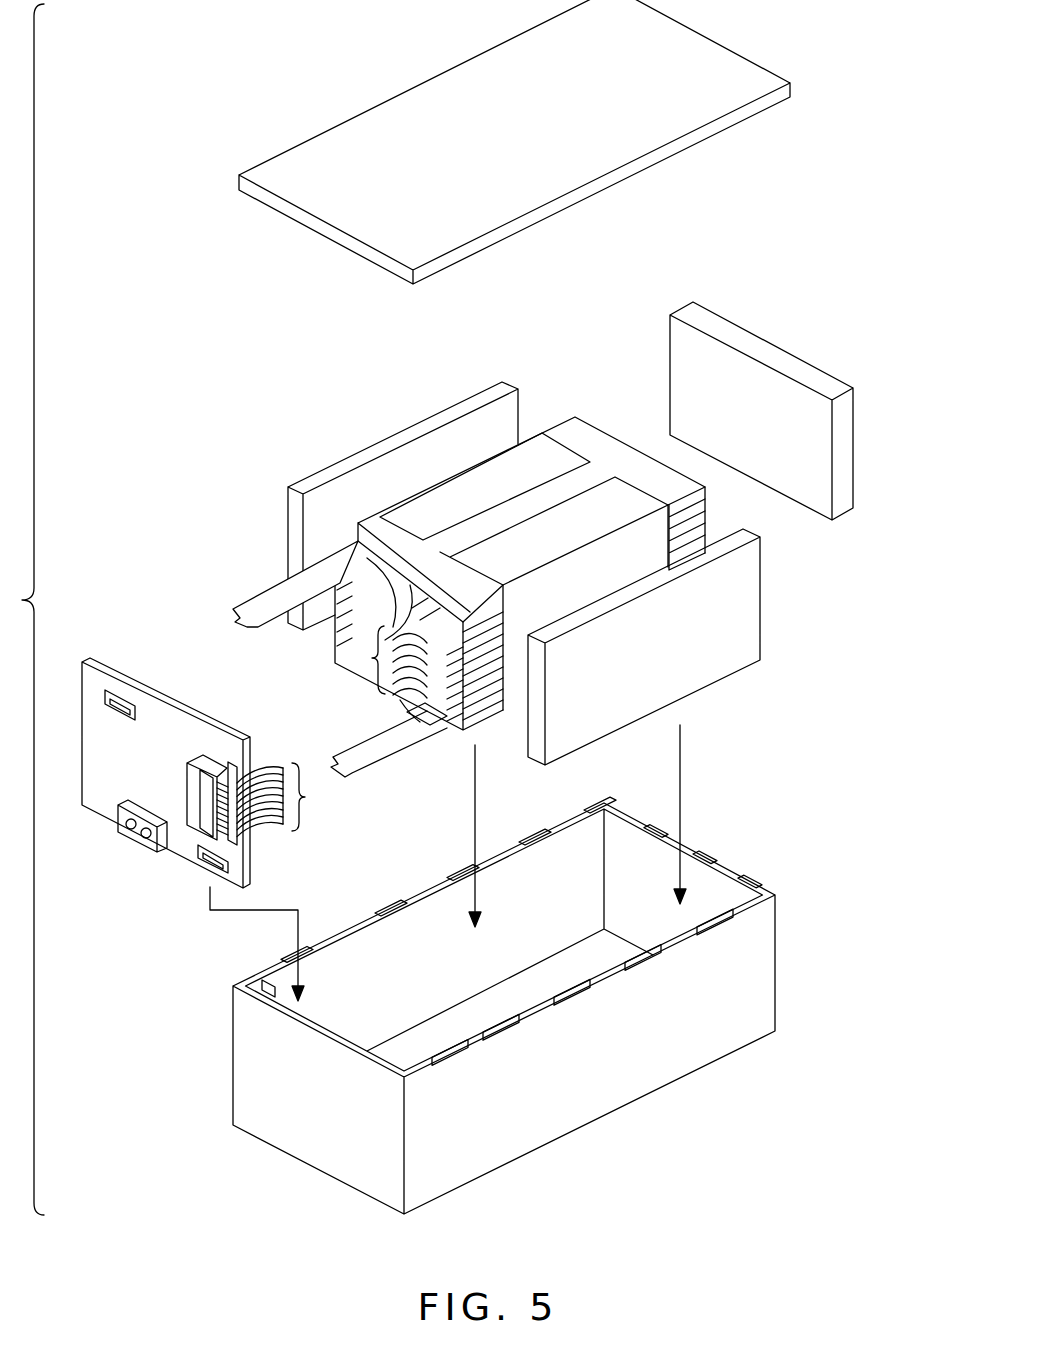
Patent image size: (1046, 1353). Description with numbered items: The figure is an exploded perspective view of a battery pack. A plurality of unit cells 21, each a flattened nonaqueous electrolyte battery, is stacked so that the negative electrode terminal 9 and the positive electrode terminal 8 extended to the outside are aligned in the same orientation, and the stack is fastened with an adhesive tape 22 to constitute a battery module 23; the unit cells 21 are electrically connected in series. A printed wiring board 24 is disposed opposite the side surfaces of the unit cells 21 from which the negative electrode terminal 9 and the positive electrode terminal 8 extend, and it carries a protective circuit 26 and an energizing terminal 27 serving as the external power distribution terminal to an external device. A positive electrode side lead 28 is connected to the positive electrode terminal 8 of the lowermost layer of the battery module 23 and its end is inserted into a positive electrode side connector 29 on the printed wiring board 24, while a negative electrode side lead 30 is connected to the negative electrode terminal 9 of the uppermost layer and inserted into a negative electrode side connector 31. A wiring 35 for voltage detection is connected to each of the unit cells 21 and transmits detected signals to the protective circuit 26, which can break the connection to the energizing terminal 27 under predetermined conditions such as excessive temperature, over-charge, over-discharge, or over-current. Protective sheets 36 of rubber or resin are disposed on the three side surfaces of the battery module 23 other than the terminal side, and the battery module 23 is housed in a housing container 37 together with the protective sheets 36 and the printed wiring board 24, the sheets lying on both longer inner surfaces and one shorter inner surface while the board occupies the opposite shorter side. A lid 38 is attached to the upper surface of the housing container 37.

The positive electrode terminal 8 is at (427, 613).
The negative electrode terminal 9 is at (334, 552).
The unit cells 21 is at (710, 537).
The adhesive tape 22 is at (603, 507).
The battery module 23 is at (453, 474).
The printed wiring board 24 is at (118, 660).
The protective circuit 26 is at (203, 758).
The energizing terminal 27 is at (145, 848).
The positive electrode side lead 28 is at (382, 748).
The positive electrode side connector 29 is at (228, 867).
The negative electrode side lead 30 is at (248, 600).
The negative electrode side connector 31 is at (125, 703).
The wiring for voltage detection 35 is at (368, 660).
The protective sheets 36 is at (362, 460).
The housing container 37 is at (762, 969).
The lid 38 is at (720, 68).